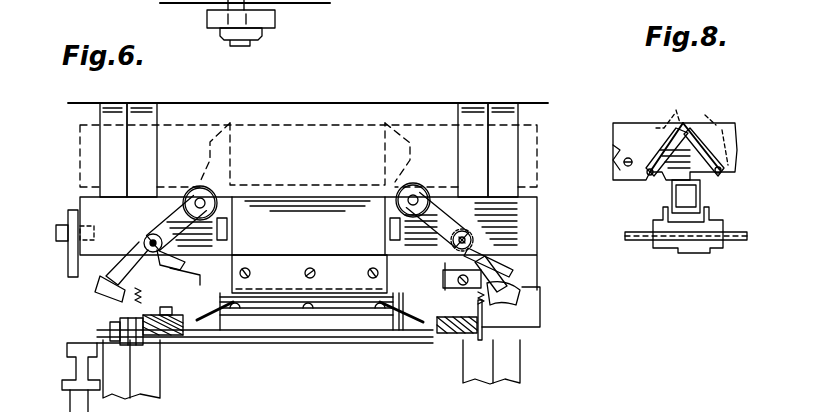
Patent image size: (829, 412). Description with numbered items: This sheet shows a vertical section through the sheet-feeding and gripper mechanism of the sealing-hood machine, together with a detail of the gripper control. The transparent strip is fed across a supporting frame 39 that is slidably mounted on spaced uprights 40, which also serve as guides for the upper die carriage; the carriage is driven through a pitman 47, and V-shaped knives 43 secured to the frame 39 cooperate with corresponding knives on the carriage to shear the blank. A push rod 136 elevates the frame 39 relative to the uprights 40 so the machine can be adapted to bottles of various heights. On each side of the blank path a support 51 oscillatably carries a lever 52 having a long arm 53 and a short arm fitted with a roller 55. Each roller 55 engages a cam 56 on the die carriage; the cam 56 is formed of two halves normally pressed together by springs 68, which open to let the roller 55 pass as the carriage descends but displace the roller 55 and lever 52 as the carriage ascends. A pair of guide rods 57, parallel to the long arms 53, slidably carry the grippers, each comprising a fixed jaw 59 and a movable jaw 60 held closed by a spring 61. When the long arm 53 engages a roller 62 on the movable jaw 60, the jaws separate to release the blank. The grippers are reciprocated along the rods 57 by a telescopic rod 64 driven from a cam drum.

In FIG. 6, the supporting frame 39 is at (318, 0).
In FIG. 6, the uprights 40 is at (100, 112).
In FIG. 6, the V-shaped knives 43 is at (293, 325).
In FIG. 6, the pitman 47 is at (277, 22).
In FIG. 6, the supports 51 is at (146, 248).
In FIG. 8, the supports 51 is at (672, 248).
In FIG. 6, the levers 52 is at (440, 215).
In FIG. 6, the long arm 53 is at (517, 274).
In FIG. 6, the roller 55 is at (196, 186).
In FIG. 8, the roller 55 is at (672, 195).
In FIG. 6, the cams 56 is at (200, 178).
In FIG. 8, the cams 56 is at (675, 110).
In FIG. 6, the guide rods 57 is at (175, 337).
In FIG. 6, the fixed jaw 59 is at (200, 322).
In FIG. 6, the movable jaw 60 is at (205, 268).
In FIG. 6, the spring 61 is at (491, 362).
In FIG. 6, the roller 62 is at (95, 292).
In FIG. 6, the telescopic rod 64 is at (128, 355).
In FIG. 8, the springs 68 is at (622, 160).
In FIG. 6, the push rod 136 is at (110, 331).